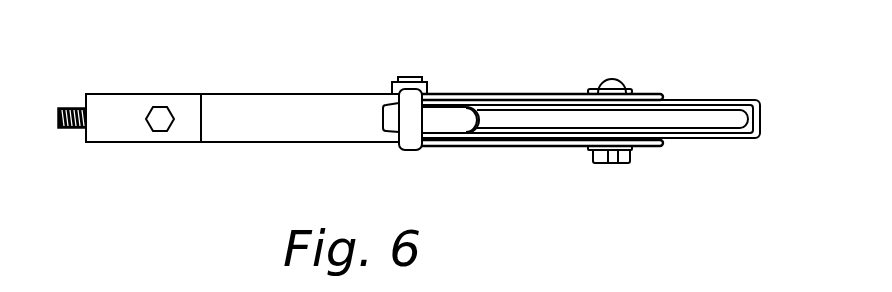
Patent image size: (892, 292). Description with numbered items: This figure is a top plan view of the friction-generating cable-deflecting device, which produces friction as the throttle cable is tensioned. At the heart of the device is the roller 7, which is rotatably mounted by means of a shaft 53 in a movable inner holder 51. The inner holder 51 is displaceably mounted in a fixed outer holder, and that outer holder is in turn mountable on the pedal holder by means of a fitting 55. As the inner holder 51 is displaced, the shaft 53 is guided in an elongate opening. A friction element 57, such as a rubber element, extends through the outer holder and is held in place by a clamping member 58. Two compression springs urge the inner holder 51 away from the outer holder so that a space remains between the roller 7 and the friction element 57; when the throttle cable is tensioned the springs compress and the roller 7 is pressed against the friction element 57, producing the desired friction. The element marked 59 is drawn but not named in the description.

The roller 7 is at (688, 120).
The inner holder 51 is at (758, 102).
The shaft 53 is at (612, 78).
The fitting 55 is at (98, 103).
The friction element 57 is at (440, 123).
The clamping member 58 is at (405, 140).
The ring 59 is at (472, 105).